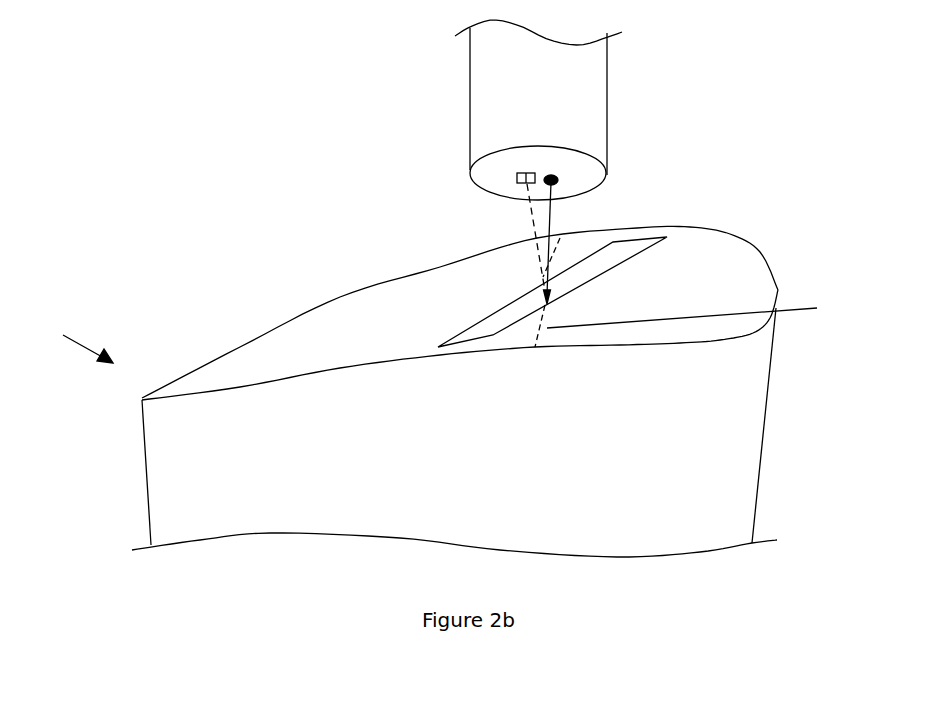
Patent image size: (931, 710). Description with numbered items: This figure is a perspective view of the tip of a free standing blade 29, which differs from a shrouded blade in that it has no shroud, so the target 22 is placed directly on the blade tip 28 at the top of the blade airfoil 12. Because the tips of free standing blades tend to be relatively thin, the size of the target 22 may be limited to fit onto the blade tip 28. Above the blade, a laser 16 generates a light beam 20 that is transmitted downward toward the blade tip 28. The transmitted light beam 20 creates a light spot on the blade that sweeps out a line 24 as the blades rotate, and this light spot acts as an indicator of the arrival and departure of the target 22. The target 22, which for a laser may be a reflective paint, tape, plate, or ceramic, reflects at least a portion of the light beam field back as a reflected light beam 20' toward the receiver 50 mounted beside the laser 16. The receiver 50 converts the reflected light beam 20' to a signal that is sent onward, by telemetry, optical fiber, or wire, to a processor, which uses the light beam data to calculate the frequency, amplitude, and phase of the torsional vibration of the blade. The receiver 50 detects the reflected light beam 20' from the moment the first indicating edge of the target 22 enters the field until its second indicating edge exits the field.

The blade airfoil 12 is at (770, 433).
The laser 16 is at (557, 178).
The light beam 20 is at (610, 264).
The reflected light beam 20' is at (471, 243).
The target 22 is at (665, 238).
The line 24 is at (696, 313).
The blade tip 28 is at (748, 278).
The free standing blade 29 is at (74, 342).
The receiver 50 is at (513, 177).